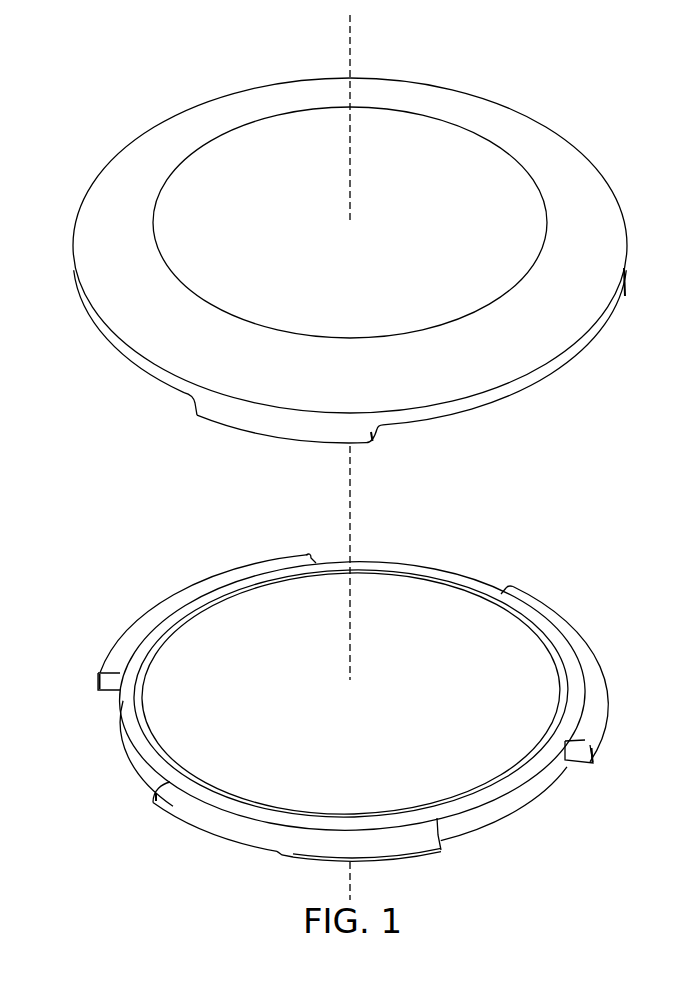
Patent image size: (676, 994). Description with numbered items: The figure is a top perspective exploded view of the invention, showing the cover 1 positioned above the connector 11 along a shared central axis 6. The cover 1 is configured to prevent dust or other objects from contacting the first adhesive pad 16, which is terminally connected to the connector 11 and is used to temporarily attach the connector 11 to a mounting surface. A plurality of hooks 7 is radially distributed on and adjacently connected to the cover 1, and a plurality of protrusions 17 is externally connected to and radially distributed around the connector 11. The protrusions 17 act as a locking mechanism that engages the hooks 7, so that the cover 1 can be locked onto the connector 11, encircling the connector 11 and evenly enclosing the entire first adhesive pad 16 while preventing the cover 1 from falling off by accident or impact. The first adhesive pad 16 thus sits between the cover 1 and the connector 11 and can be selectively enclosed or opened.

The cover 1 is at (350, 283).
The central axis 6 is at (349, 57).
The plurality of hooks 7 is at (188, 410).
The connector 11 is at (340, 710).
The first adhesive pad 16 is at (396, 580).
The plurality of protrusions 17 is at (120, 612).